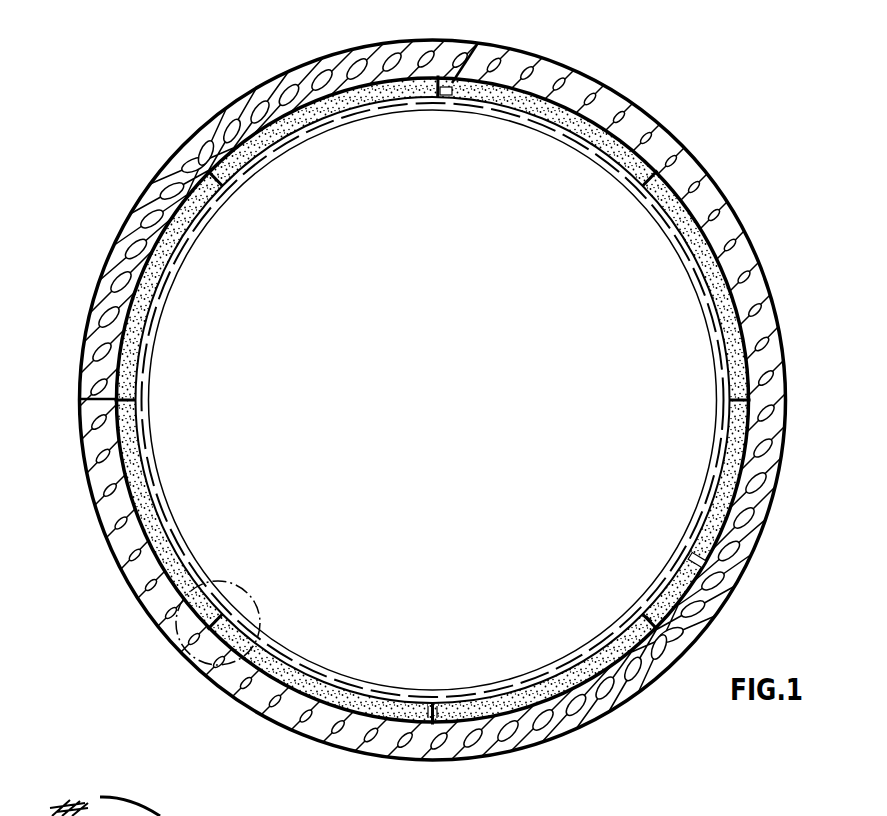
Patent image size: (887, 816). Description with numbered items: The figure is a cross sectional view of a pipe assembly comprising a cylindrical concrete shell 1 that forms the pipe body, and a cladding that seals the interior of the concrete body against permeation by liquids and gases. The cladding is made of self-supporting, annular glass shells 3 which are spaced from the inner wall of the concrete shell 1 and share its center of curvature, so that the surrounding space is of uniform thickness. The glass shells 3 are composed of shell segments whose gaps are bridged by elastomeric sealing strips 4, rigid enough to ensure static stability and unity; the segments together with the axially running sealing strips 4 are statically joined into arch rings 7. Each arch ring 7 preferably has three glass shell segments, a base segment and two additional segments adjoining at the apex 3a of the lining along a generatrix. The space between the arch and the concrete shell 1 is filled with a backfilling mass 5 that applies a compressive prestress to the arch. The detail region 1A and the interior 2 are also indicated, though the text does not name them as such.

The concrete shell 1 is at (757, 280).
The detail region 1A is at (245, 590).
The inner lining 2 is at (572, 173).
The glass shells 3 is at (302, 135).
The apex of the lining 3a is at (478, 43).
The sealing strips 4 is at (440, 98).
The backfilling mass 5 is at (100, 508).
The arch rings 7 is at (673, 258).